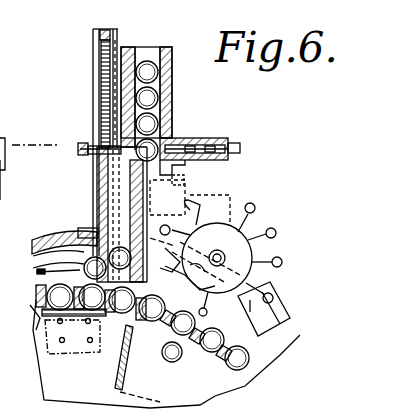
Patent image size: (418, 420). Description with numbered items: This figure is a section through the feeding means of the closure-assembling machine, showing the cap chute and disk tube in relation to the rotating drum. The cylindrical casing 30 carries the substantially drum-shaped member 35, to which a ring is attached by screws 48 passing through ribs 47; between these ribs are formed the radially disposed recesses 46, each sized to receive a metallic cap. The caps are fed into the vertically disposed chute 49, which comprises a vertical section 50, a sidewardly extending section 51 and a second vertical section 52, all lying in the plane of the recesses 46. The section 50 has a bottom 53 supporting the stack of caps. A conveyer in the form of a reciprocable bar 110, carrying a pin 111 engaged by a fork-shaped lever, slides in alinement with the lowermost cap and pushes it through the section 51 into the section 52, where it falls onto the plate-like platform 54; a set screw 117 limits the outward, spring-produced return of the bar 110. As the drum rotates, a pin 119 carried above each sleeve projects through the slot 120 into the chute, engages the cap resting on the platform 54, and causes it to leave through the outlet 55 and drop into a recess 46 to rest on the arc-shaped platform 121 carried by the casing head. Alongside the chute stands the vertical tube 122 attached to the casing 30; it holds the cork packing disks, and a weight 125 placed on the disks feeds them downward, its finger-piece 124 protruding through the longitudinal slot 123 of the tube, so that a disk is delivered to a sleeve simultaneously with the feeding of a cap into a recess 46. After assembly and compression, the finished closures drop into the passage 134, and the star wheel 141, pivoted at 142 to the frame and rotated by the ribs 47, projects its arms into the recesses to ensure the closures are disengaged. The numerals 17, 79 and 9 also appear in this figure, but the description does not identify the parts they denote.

The frame part 17 is at (22, 73).
The lever 79 is at (0, 128).
The axis line 9 is at (36, 142).
The weight 125 is at (95, 31).
The finger-piece 124 is at (104, 42).
The vertical tube 122 is at (95, 70).
The longitudinal slot 123 is at (100, 91).
The chute 49 is at (168, 47).
The vertical section 50 is at (172, 100).
The reciprocable bar 110 is at (178, 139).
The pin 111 is at (228, 137).
The set screw 117 is at (241, 148).
The bottom 53 is at (178, 172).
The sidewardly extending section 51 is at (90, 153).
The second vertical section 52 is at (100, 197).
The platform 54 is at (121, 306).
The slot 120 is at (158, 292).
The cylindrical casing 30 is at (56, 240).
The outlet 55 is at (38, 270).
The screws 48 is at (40, 305).
The arc-shaped platform 121 is at (45, 325).
The passage 134 is at (122, 380).
The drum-shaped member 35 is at (232, 386).
The recess 46 is at (128, 318).
The ribs 47 is at (174, 362).
The star wheel 141 is at (280, 234).
The pivot 142 is at (224, 256).
The pin 119 is at (276, 326).